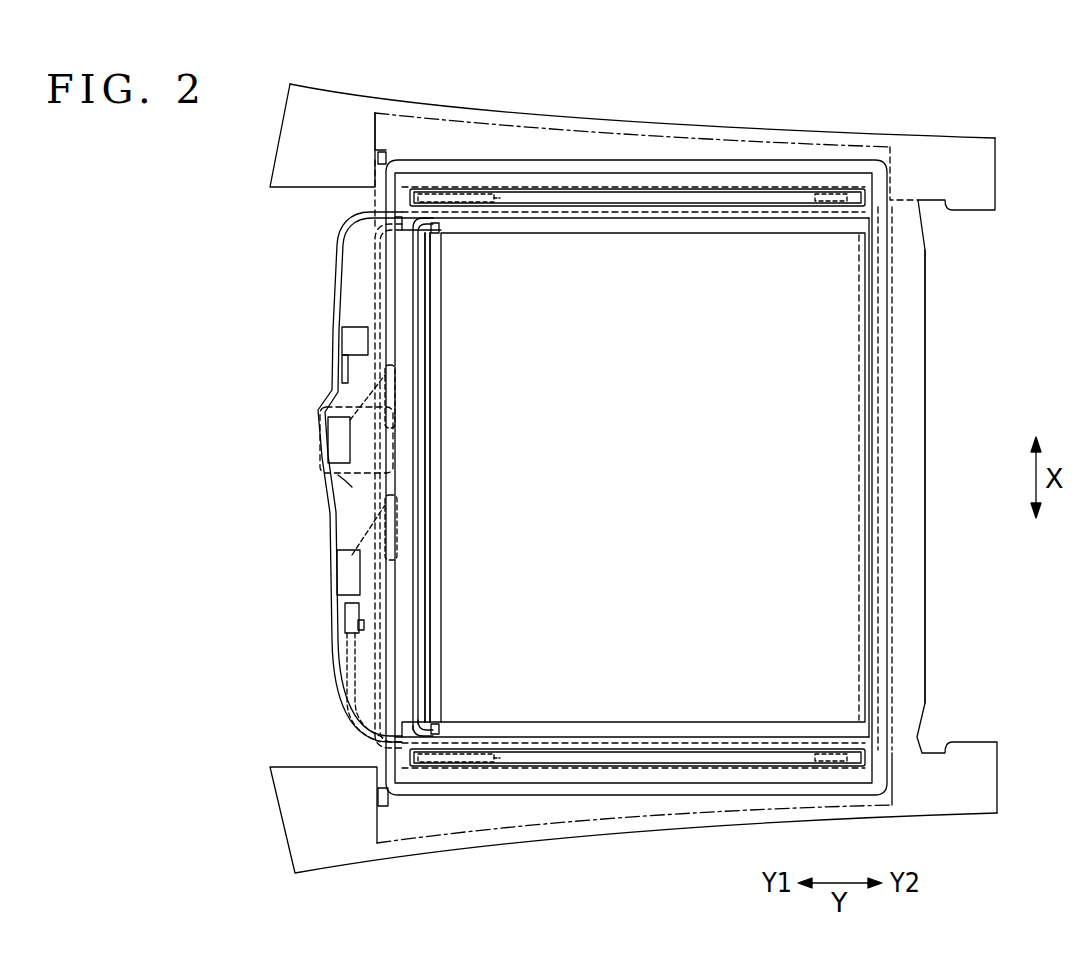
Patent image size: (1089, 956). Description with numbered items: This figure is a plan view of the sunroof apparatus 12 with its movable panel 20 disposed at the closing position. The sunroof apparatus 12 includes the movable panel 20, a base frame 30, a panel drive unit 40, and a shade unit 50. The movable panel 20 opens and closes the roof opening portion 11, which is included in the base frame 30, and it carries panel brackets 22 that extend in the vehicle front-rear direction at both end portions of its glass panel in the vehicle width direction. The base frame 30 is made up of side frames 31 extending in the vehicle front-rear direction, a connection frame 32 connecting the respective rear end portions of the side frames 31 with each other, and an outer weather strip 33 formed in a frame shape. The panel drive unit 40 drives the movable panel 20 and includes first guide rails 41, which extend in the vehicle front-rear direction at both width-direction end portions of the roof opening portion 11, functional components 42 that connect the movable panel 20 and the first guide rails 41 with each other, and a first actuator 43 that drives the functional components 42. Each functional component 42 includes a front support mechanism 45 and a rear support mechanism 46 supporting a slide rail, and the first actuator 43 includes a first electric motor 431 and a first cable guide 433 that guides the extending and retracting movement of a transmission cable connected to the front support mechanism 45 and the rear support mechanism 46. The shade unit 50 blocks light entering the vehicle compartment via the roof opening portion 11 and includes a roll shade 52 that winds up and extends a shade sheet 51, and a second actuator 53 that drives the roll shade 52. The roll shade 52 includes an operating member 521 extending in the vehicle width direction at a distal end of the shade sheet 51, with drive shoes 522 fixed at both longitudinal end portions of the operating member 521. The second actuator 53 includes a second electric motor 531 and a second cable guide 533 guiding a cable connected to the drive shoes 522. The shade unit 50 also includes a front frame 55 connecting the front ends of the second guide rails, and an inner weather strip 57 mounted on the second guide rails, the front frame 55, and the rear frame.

The roof opening portion 11 is at (431, 300).
The sunroof apparatus 12 is at (895, 84).
The movable panel 20 is at (717, 133).
The panel bracket 22 is at (742, 222).
The base frame 30 is at (276, 147).
The side frame 31 is at (994, 164).
The connection frame 32 is at (927, 337).
The outer weather strip 33 is at (580, 158).
The panel drive unit 40 is at (633, 477).
The first guide rail 41 is at (513, 188).
The functional component 42 is at (609, 200).
The first actuator 43 is at (334, 443).
The front support mechanism 45 is at (509, 202).
The rear support mechanism 46 is at (815, 203).
The shade unit 50 is at (498, 477).
The shade sheet 51 is at (847, 397).
The roll shade 52 is at (858, 460).
The second actuator 53 is at (346, 577).
The front frame 55 is at (366, 689).
The inner weather strip 57 is at (425, 546).
The first electric motor 431 is at (400, 370).
The first cable guide 433 is at (332, 350).
The operating member 521 is at (441, 424).
The drive shoe 522 is at (436, 236).
The second electric motor 531 is at (400, 497).
The second cable guide 533 is at (342, 608).